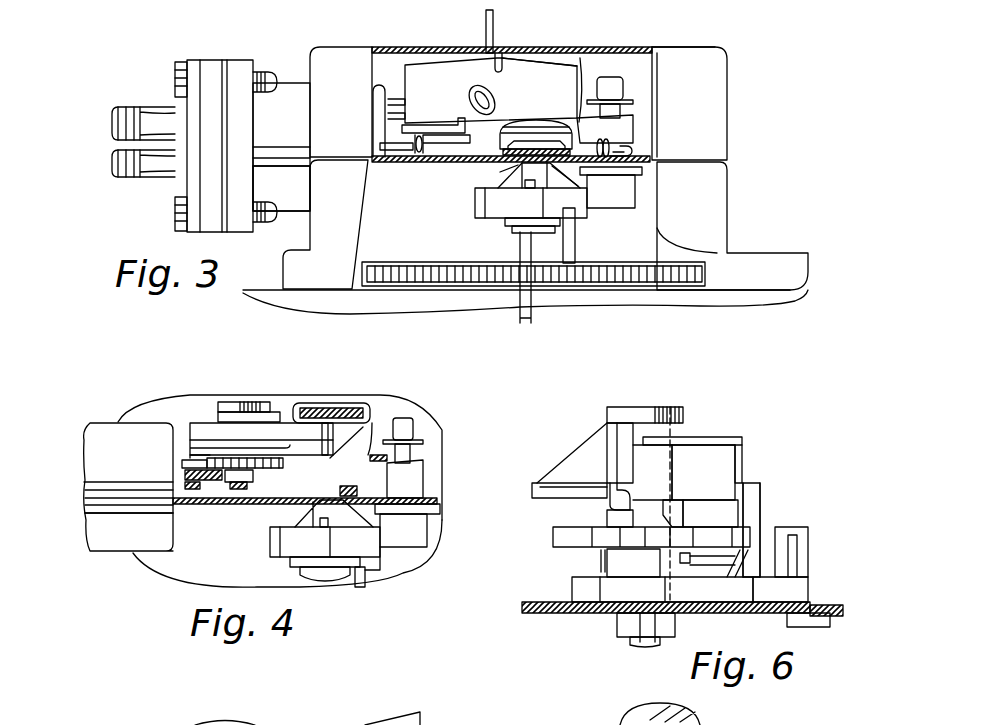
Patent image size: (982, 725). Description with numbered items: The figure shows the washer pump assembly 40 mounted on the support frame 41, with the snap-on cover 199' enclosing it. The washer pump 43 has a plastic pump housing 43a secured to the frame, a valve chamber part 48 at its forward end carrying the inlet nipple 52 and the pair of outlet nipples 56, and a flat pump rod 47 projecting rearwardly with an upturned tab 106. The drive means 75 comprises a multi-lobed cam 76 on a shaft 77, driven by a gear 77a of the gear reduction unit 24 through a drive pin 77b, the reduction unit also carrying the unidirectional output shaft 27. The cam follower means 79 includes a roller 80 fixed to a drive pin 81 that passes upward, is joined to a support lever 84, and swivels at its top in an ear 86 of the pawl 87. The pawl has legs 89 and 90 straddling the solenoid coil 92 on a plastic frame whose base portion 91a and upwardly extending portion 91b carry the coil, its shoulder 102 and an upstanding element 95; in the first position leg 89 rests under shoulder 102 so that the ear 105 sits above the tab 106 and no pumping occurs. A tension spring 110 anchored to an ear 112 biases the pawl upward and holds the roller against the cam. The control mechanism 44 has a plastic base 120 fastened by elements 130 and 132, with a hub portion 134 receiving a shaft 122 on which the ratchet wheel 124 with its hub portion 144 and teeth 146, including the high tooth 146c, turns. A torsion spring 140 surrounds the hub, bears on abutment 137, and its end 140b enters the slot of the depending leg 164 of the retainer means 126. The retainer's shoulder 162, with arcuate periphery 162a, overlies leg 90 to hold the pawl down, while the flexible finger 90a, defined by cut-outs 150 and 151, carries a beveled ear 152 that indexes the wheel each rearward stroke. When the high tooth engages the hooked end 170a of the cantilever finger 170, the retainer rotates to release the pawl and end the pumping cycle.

In FIG. 3, the gear reduction unit 24 is at (763, 302).
In FIG. 3, the unidirectional output shaft 27 is at (527, 323).
In FIG. 3, the washer pump assembly 40 is at (704, 47).
In FIG. 3, the support frame 41 is at (660, 166).
In FIG. 4, the support frame 41 is at (190, 508).
In FIG. 6, the support frame 41 is at (545, 605).
In FIG. 3, the washer pump 43 is at (289, 83).
In FIG. 4, the washer pump 43 is at (102, 441).
In FIG. 3, the pump housing 43a is at (283, 190).
In FIG. 4, the pump housing 43a is at (110, 535).
In FIG. 4, the control mechanism 44 is at (212, 410).
In FIG. 6, the control mechanism 44 is at (757, 430).
In FIG. 3, the pump rod 47 is at (382, 142).
In FIG. 4, the pump rod 47 is at (360, 490).
In FIG. 3, the valve chamber part 48 is at (218, 60).
In FIG. 3, the inlet nipple 52 is at (118, 112).
In FIG. 3, the outlet nipples 56 is at (118, 165).
In FIG. 3, the drive means 75 is at (515, 297).
In FIG. 3, the multi-lobed cam 76 is at (490, 207).
In FIG. 4, the multi-lobed cam 76 is at (300, 545).
In FIG. 3, the shaft 77 is at (500, 172).
In FIG. 4, the shaft 77 is at (320, 576).
In FIG. 3, the gear 77a is at (668, 279).
In FIG. 3, the drive pin 77b is at (568, 258).
In FIG. 4, the drive pin 77b is at (360, 588).
In FIG. 3, the cam follower means 79 is at (612, 88).
In FIG. 4, the cam follower means 79 is at (415, 428).
In FIG. 3, the cam follower roller 80 is at (622, 195).
In FIG. 4, the cam follower roller 80 is at (400, 535).
In FIG. 3, the drive pin 81 is at (613, 110).
In FIG. 4, the drive pin 81 is at (415, 452).
In FIG. 3, the support lever 84 is at (645, 171).
In FIG. 4, the support lever 84 is at (430, 514).
In FIG. 3, the ear 86 is at (620, 128).
In FIG. 4, the ear 86 is at (425, 472).
In FIG. 3, the pawl 87 is at (580, 66).
In FIG. 4, the pawl 87 is at (370, 445).
In FIG. 3, the leg 89 is at (408, 90).
In FIG. 4, the leg 90 is at (303, 437).
In FIG. 4, the flexible finger 90a is at (205, 455).
In FIG. 3, the base portion 91a is at (543, 140).
In FIG. 3, the upwardly extending portion 91b is at (499, 58).
In FIG. 3, the solenoid coil 92 is at (530, 122).
In FIG. 3, the pin 95 is at (489, 25).
In FIG. 3, the shoulder 102 is at (568, 72).
In FIG. 4, the ear 105 is at (205, 486).
In FIG. 3, the upturned tab 106 is at (433, 135).
In FIG. 4, the upturned tab 106 is at (228, 490).
In FIG. 3, the tension spring 110 is at (413, 160).
In FIG. 3, the ear 112 is at (620, 148).
In FIG. 6, the plastic base 120 is at (783, 586).
In FIG. 6, the shaft 122 is at (688, 433).
In FIG. 4, the ratchet wheel 124 is at (265, 470).
In FIG. 6, the ratchet wheel 124 is at (575, 538).
In FIG. 4, the retainer means 126 is at (270, 400).
In FIG. 6, the retainer means 126 is at (598, 447).
In FIG. 6, the fastener element 130 is at (790, 618).
In FIG. 6, the fastener element 132 is at (622, 625).
In FIG. 6, the hub portion 134 is at (652, 567).
In FIG. 6, the abutment 137 is at (748, 575).
In FIG. 6, the torsion spring 140 is at (600, 562).
In FIG. 6, the spring end 140b is at (764, 550).
In FIG. 6, the hub portion 144 is at (688, 511).
In FIG. 6, the ratchet teeth 146 is at (598, 549).
In FIG. 6, the high tooth 146c is at (703, 472).
In FIG. 4, the cut-out 150 is at (210, 456).
In FIG. 4, the cut-out 151 is at (318, 462).
In FIG. 4, the beveled ear 152 is at (205, 465).
In FIG. 4, the shoulder 162 is at (280, 412).
In FIG. 6, the shoulder 162 is at (722, 437).
In FIG. 6, the arcuate outer periphery 162a is at (742, 446).
In FIG. 6, the depending leg portion 164 is at (757, 498).
In FIG. 6, the cantilever finger 170 is at (577, 488).
In FIG. 6, the hooked free end 170a is at (617, 497).
In FIG. 3, the housing wall 199' is at (734, 44).